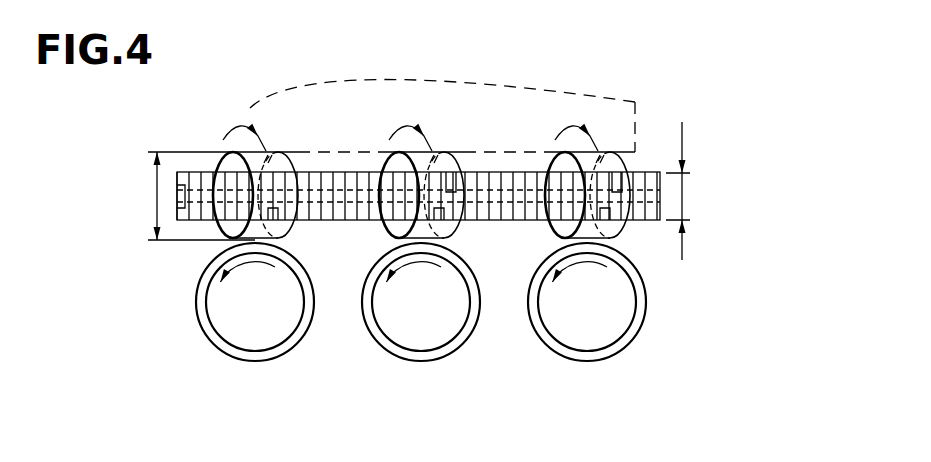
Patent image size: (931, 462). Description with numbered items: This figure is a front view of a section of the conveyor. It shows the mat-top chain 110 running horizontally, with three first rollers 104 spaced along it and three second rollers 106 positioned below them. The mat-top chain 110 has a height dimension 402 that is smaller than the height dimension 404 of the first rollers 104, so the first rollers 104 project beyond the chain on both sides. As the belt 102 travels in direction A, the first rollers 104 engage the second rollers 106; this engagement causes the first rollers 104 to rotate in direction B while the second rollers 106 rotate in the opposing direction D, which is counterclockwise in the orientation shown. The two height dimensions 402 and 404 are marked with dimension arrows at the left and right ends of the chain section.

The belt 102 is at (723, 145).
The first rollers 104 is at (226, 229).
The second rollers 106 is at (214, 340).
The mat-top chain 110 is at (640, 173).
The height dimension 402 is at (682, 194).
The height dimension 404 is at (157, 196).